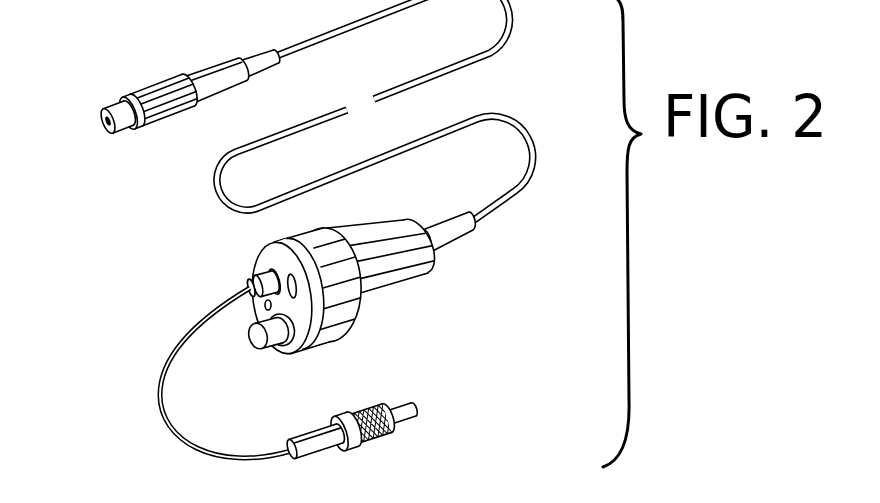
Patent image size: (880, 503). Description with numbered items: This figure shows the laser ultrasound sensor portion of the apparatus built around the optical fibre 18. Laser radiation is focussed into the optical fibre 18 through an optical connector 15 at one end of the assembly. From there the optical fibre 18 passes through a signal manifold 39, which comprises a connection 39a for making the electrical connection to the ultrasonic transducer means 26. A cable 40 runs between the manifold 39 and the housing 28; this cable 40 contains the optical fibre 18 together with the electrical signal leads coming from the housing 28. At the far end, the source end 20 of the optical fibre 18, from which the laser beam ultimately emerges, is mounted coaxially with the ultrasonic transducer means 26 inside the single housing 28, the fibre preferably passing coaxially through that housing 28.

The optical connector 15 is at (378, 440).
The optical fibre 18 is at (181, 437).
The source end 20 is at (100, 124).
The ultrasonic transducer means 26 is at (99, 100).
The housing 28 is at (146, 78).
The signal manifold 39 is at (252, 259).
The connection 39a is at (269, 349).
The cable 40 is at (535, 152).